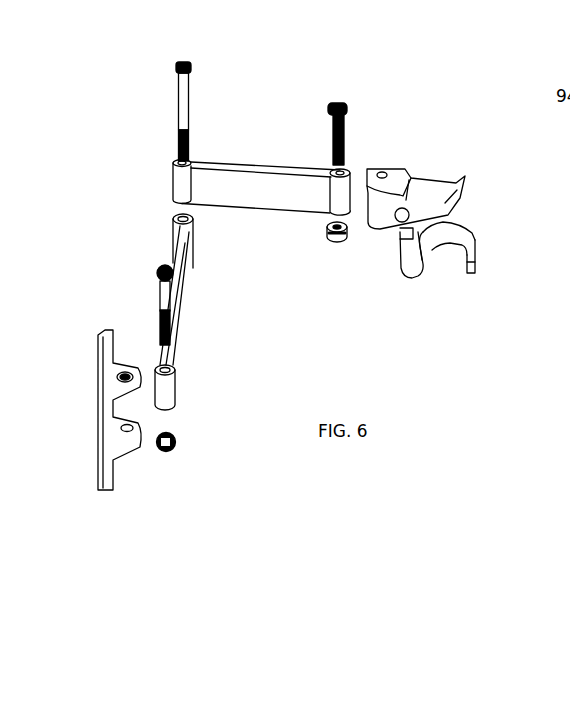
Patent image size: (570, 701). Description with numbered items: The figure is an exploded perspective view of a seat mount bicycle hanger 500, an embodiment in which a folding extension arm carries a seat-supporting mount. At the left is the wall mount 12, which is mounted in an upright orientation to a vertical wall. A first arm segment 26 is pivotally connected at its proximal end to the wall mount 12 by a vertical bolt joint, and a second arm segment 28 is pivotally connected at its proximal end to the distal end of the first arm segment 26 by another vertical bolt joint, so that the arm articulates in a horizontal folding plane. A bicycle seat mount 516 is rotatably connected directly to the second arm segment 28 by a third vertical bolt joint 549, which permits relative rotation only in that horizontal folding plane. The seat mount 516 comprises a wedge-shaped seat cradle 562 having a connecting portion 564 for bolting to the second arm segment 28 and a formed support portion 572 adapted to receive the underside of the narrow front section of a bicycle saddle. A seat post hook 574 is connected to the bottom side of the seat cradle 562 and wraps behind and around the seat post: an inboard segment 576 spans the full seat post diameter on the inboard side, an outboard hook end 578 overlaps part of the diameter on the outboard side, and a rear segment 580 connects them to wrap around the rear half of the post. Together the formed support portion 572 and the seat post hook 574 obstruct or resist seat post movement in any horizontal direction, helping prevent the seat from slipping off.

The seat mount bicycle hanger 500 is at (145, 166).
The second arm segment 28 is at (253, 153).
The third vertical bolt joint 549 is at (318, 233).
The first arm segment 26 is at (200, 299).
The wall mount 12 is at (114, 468).
The bicycle seat mount 516 is at (445, 211).
The connecting portion 564 is at (383, 160).
The formed support portion 572 is at (435, 183).
The wedge-shaped seat cradle 562 is at (472, 193).
The rear segment 580 is at (458, 222).
The seat post hook 574 is at (496, 249).
The inboard segment 576 is at (432, 265).
The outboard hook end 578 is at (477, 262).